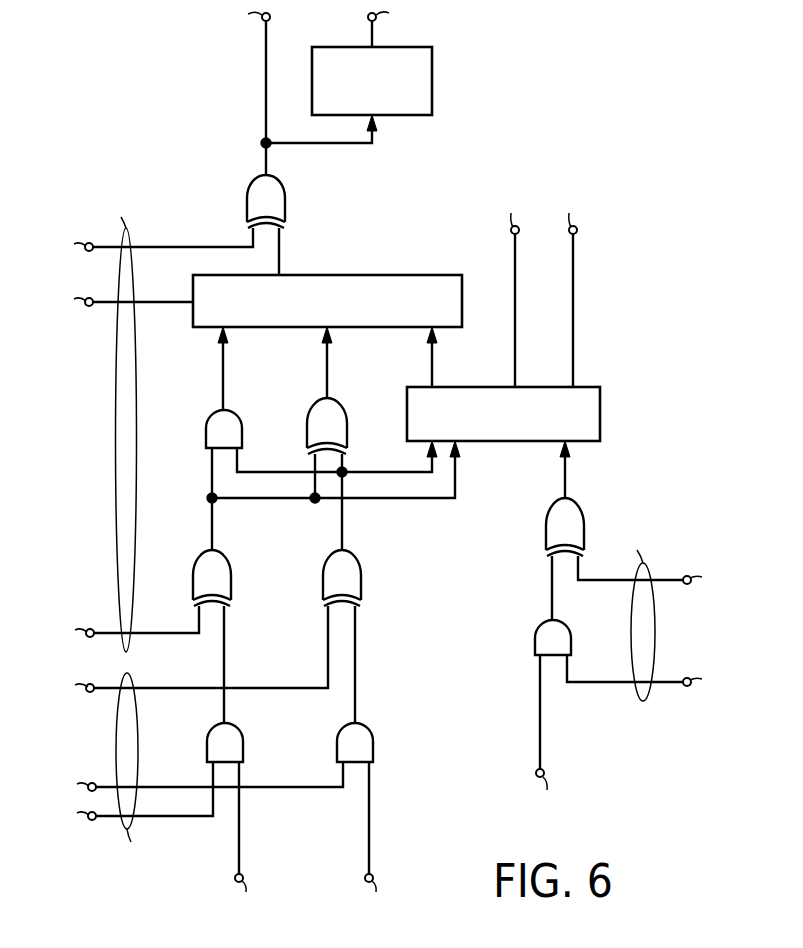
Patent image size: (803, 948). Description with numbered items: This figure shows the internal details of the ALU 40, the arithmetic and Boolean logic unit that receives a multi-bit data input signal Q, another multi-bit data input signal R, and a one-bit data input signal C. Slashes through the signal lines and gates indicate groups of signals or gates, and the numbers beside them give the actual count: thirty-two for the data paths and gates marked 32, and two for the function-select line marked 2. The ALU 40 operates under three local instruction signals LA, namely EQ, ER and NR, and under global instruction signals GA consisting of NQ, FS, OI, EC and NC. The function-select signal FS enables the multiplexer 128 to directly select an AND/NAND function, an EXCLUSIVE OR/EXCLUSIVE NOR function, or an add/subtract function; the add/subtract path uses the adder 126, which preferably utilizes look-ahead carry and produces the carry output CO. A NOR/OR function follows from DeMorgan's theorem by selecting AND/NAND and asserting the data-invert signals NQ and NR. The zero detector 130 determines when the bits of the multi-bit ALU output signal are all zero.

The ALU 40 is at (700, 344).
The adder 126 is at (600, 413).
The multiplexer 128 is at (395, 276).
The zero detector 130 is at (432, 77).
The 32-bit bus 32 is at (273, 70).
The 2-bit bus 2 is at (183, 295).